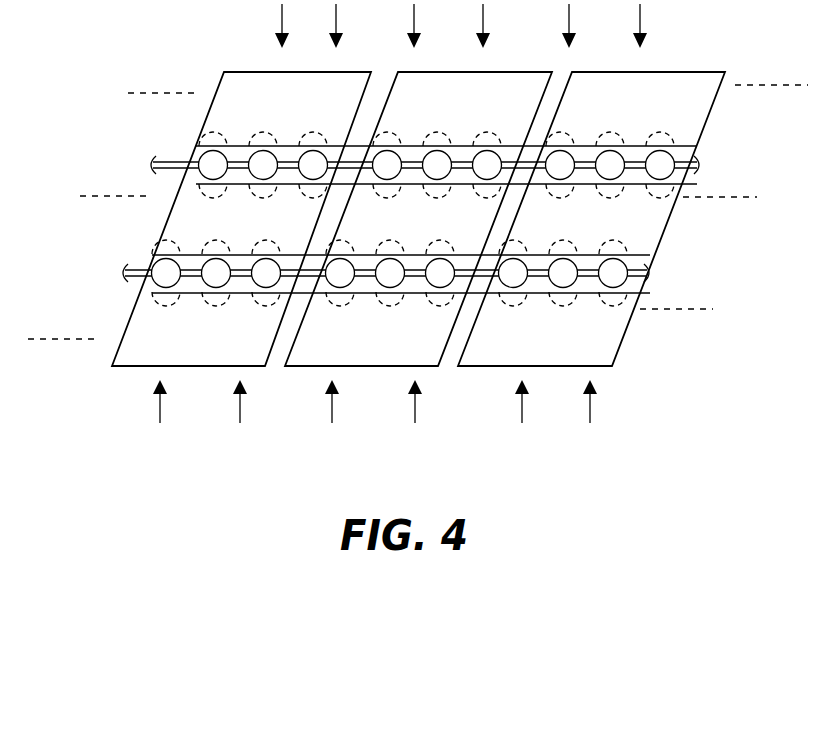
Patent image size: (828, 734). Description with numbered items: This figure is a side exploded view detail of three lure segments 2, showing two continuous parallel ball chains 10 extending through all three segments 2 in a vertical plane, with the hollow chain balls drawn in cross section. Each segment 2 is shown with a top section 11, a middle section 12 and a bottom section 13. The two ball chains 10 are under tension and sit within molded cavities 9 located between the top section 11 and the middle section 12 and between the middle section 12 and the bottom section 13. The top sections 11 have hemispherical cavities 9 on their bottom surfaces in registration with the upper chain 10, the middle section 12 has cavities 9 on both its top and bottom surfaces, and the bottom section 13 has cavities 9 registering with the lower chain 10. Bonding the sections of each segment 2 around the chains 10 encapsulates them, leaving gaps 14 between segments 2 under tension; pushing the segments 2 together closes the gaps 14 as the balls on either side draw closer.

The segment 2 is at (217, 368).
The recess 9 is at (217, 130).
The ball chain 10 is at (698, 167).
The top section 11 is at (680, 117).
The middle section 12 is at (652, 221).
The bottom section 13 is at (607, 327).
The gap 14 is at (277, 368).